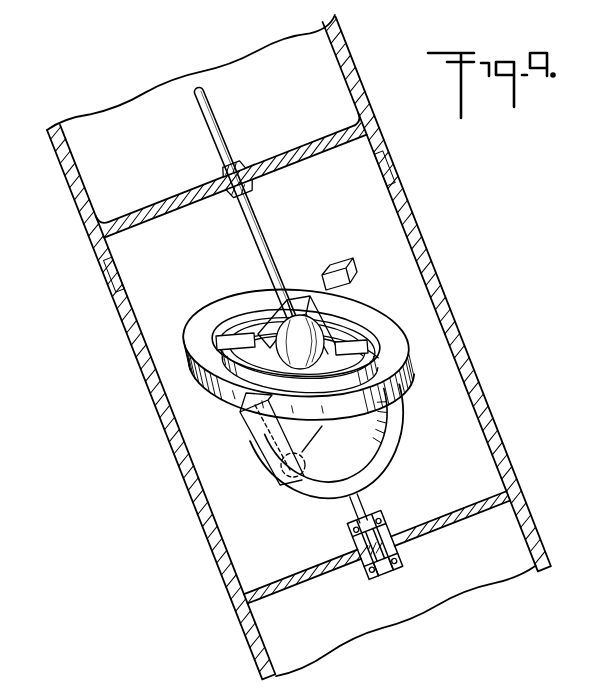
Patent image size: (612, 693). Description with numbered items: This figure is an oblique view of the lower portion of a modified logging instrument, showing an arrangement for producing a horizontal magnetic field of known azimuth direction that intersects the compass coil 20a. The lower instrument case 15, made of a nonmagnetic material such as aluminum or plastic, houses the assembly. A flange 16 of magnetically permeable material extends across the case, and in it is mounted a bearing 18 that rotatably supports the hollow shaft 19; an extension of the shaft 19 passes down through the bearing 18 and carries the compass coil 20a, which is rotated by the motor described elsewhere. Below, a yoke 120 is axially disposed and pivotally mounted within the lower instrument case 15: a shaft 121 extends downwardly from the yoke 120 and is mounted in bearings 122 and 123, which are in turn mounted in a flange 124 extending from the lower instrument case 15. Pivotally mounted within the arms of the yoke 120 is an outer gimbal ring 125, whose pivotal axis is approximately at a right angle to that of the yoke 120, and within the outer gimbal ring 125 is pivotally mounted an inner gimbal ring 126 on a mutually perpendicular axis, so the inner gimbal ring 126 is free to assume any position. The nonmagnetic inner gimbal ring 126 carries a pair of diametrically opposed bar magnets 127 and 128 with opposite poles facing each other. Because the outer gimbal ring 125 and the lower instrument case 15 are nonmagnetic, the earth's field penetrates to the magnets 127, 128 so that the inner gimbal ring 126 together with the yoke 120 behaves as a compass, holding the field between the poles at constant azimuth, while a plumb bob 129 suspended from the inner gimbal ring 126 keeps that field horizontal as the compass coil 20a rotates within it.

The lower instrument case 15 is at (458, 329).
The flange 16 is at (298, 137).
The bearing 18 is at (238, 166).
The hollow shaft 19 is at (240, 213).
The compass coil 20a is at (300, 292).
The yoke 120 is at (398, 455).
The shaft 121 is at (370, 501).
The bearing 122 is at (382, 521).
The bearing 123 is at (401, 557).
The flange 124 is at (290, 581).
The outer gimbal ring 125 is at (186, 337).
The inner gimbal ring 126 is at (340, 300).
The bar magnet 127 is at (240, 333).
The bar magnet 128 is at (352, 341).
The plumb bob 129 is at (303, 461).